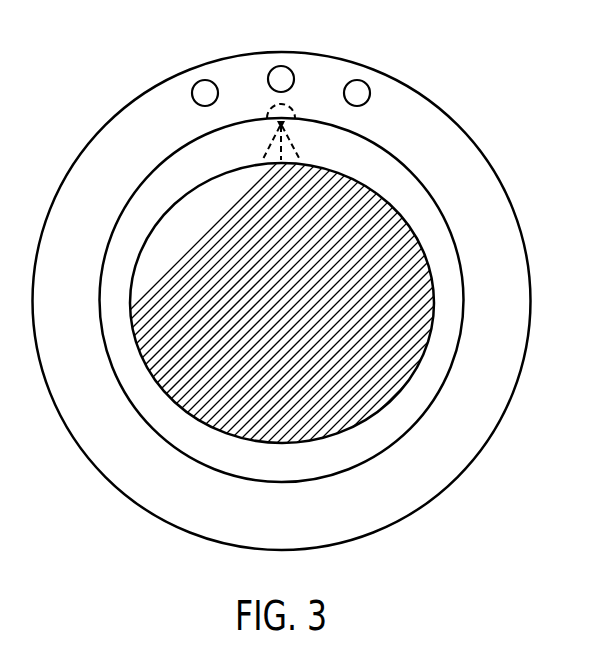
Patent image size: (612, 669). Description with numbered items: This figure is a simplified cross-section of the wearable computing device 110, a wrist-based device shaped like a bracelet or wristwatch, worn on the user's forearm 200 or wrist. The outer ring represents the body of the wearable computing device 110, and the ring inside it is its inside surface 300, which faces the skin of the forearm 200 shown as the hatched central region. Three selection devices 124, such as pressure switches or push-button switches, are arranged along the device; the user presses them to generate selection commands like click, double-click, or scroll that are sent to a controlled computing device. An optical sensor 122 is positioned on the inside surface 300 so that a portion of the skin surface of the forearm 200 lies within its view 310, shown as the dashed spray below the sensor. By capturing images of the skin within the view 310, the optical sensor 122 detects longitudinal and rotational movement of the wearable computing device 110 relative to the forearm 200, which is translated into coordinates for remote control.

The wearable computing device 110 is at (440, 107).
The inside surface 300 is at (157, 170).
The user's forearm 200 is at (130, 283).
The selection devices 124 is at (205, 80).
The optical sensor 122 is at (295, 116).
The view 310 is at (304, 140).